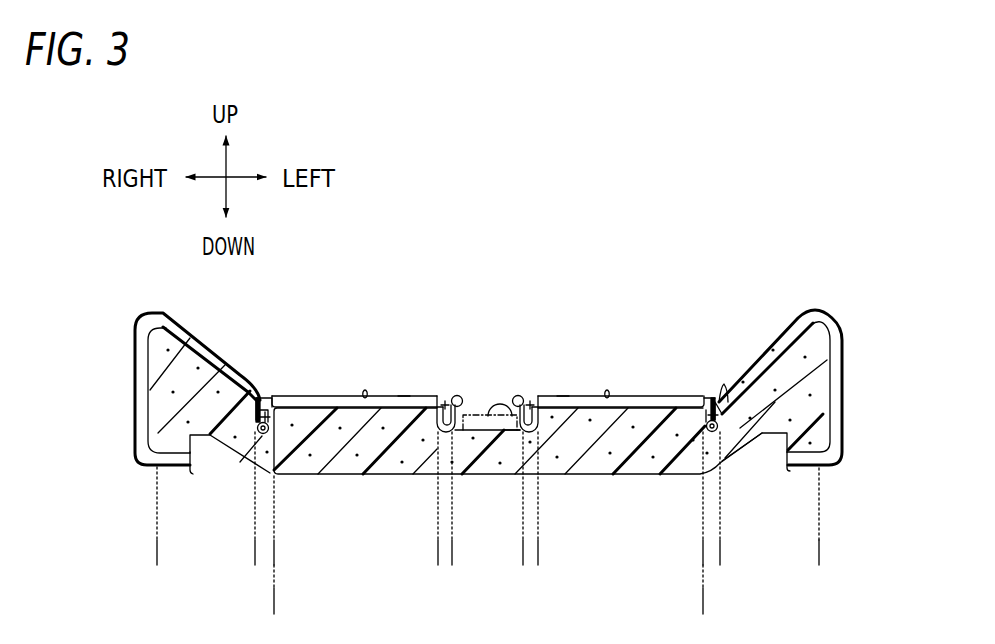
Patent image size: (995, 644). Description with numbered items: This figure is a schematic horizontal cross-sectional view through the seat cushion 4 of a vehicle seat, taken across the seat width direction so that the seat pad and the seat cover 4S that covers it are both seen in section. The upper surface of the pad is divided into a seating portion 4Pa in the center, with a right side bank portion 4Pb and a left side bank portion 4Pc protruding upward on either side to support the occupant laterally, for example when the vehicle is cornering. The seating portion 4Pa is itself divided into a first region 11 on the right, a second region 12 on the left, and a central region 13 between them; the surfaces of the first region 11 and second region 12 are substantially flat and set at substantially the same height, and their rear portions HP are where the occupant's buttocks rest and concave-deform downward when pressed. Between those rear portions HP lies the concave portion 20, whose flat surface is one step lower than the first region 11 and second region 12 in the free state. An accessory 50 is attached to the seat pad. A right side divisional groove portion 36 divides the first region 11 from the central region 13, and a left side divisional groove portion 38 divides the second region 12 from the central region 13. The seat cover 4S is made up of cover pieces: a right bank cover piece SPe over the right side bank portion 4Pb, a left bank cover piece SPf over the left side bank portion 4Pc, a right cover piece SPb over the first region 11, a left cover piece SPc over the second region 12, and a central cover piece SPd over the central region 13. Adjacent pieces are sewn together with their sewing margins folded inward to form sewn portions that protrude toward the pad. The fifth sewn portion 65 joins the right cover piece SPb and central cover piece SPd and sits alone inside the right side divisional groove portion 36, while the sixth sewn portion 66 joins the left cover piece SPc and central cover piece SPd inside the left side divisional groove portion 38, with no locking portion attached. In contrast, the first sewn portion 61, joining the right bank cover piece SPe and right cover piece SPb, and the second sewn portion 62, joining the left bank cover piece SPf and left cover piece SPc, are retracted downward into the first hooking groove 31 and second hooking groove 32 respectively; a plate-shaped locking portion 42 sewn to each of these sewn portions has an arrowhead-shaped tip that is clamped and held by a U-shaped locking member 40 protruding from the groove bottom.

The seat cushion 4 is at (641, 221).
The seat cover 4S is at (779, 313).
The right bank cover piece SPe is at (166, 313).
The left bank cover piece SPf is at (812, 310).
The right cover piece SPb is at (334, 396).
The left cover piece SPc is at (645, 396).
The central cover piece SPd is at (497, 402).
The rear portion of the first and second regions HP is at (365, 394).
The fifth sewn portion 65 is at (444, 396).
The sixth sewn portion 66 is at (530, 396).
The right side divisional groove portion 36 is at (403, 396).
The left side divisional groove portion 38 is at (563, 396).
The accessory 50 is at (484, 415).
The concave portion 20 is at (513, 432).
The first sewn portion 61 is at (258, 396).
The second sewn portion 62 is at (683, 394).
The locking portion 42 is at (268, 410).
The locking member 40 is at (258, 429).
The first hooking groove 31 is at (255, 420).
The second hooking groove 32 is at (722, 412).
The first region 11 is at (437, 552).
The second region 12 is at (702, 552).
The central region 13 is at (522, 552).
The seating portion 4Pa is at (702, 602).
The right side bank portion 4Pb is at (254, 552).
The left side bank portion 4Pc is at (818, 552).